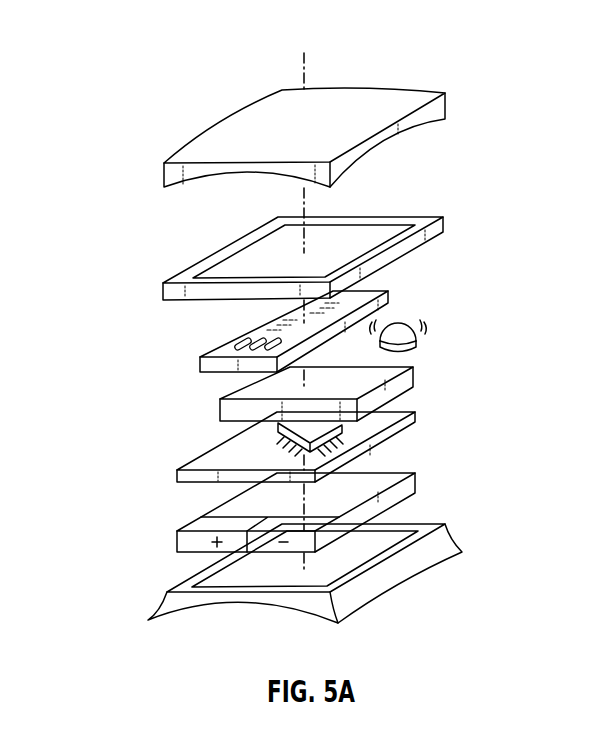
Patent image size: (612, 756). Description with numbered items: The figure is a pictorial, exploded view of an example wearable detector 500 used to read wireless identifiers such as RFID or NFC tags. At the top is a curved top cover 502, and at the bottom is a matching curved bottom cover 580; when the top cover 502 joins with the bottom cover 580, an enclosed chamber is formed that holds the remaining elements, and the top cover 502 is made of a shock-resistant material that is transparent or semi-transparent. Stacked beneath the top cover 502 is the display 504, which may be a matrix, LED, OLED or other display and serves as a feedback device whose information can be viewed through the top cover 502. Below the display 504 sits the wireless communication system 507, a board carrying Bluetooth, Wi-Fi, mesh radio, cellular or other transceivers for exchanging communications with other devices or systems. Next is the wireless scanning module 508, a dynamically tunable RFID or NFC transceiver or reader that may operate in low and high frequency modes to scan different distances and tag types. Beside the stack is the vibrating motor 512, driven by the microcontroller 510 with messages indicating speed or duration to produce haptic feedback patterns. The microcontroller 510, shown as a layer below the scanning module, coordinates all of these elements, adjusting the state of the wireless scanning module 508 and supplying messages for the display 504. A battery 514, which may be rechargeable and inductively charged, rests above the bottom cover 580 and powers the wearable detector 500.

The wearable detector 500 is at (121, 31).
The top cover 502 is at (182, 153).
The display 504 is at (183, 278).
The wireless communication system 507 is at (222, 350).
The wireless scanning module 508 is at (220, 410).
The microcontroller 510 is at (202, 462).
The vibrating motor 512 is at (418, 339).
The battery 514 is at (197, 526).
The bottom cover 580 is at (167, 603).